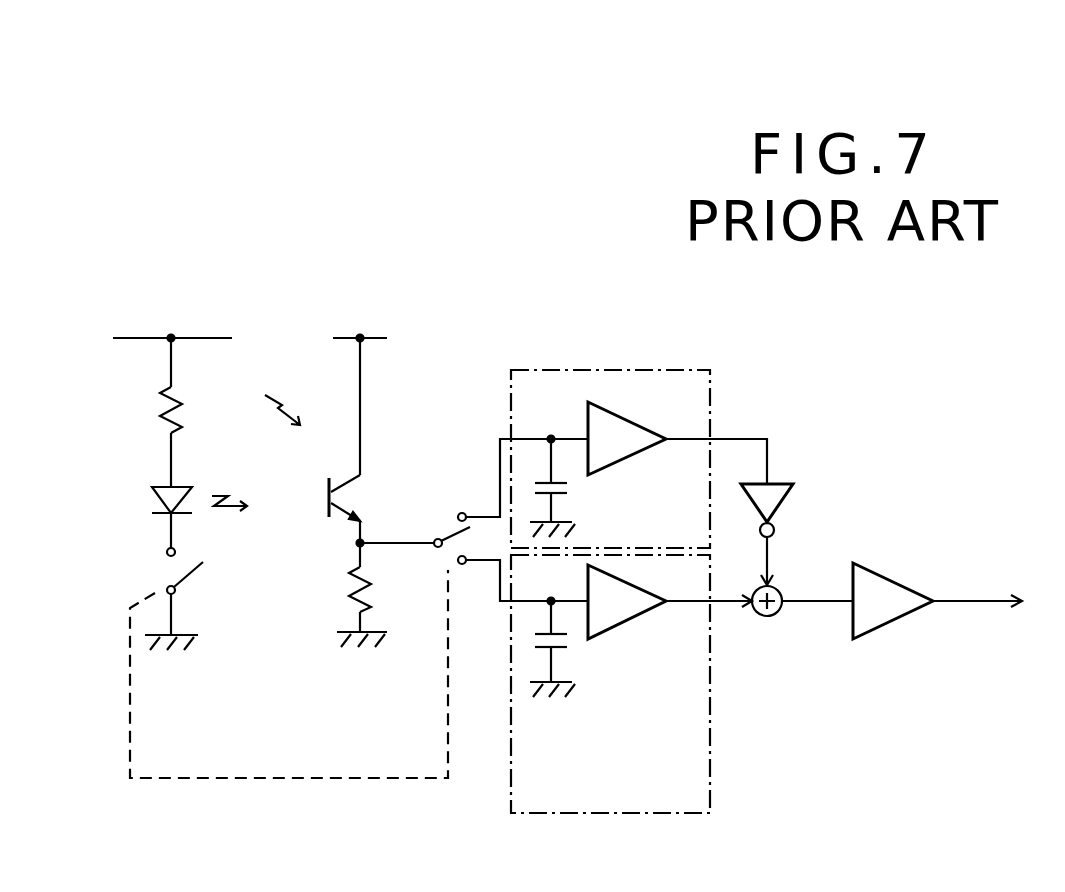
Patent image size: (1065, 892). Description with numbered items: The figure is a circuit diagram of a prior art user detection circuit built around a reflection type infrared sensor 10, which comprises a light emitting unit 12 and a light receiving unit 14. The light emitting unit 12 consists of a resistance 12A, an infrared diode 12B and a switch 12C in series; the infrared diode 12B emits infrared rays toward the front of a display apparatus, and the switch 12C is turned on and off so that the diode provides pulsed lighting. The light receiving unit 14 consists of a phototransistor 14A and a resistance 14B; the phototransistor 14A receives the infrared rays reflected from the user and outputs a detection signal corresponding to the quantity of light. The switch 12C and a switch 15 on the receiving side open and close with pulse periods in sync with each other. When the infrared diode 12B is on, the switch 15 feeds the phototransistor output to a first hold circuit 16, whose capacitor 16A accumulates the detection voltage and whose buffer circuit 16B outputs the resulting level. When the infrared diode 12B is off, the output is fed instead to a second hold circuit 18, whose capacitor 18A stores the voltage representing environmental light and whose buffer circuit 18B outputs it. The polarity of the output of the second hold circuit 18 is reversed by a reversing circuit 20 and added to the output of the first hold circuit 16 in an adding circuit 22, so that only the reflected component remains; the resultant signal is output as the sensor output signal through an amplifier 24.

The sensor 10 is at (432, 182).
The light emitting unit 12 is at (200, 322).
The resistance 12A is at (158, 410).
The infrared diode 12B is at (152, 487).
The switch 12C is at (196, 570).
The light receiving unit 14 is at (400, 348).
The phototransistor 14A is at (352, 498).
The resistance 14B is at (349, 590).
The switch 15 is at (447, 537).
The first hold circuit 16 is at (605, 800).
The capacitor 16A is at (568, 640).
The buffer circuit 16B is at (640, 620).
The second hold circuit 18 is at (710, 397).
The capacitor 18A is at (540, 480).
The buffer circuit 18B is at (647, 425).
The reversing circuit 20 is at (778, 484).
The adding circuit 22 is at (765, 617).
The amplifier 24 is at (912, 590).